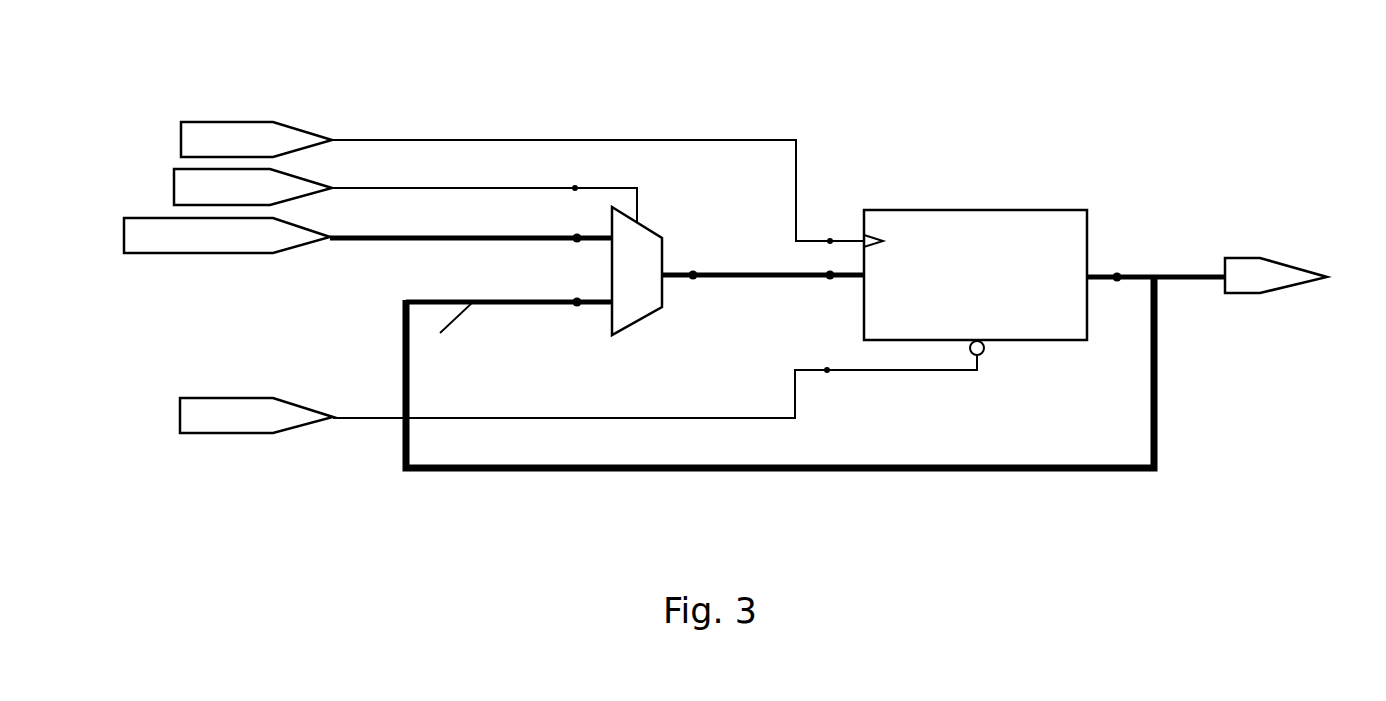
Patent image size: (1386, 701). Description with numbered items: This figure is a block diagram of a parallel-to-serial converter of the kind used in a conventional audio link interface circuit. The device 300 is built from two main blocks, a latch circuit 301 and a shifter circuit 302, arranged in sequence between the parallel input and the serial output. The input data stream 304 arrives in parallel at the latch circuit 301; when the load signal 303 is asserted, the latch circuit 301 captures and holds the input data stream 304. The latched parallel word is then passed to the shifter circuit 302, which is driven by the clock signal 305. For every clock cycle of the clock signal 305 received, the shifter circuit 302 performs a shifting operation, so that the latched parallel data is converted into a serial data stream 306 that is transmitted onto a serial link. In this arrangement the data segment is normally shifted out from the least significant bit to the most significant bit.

The device 300 is at (898, 48).
The latch circuit 301 is at (655, 227).
The shifter circuit 302 is at (997, 203).
The load signal 303 is at (172, 185).
The input data stream 304 is at (113, 235).
The clock signal 305 is at (258, 112).
The serial data stream 306 is at (1315, 255).